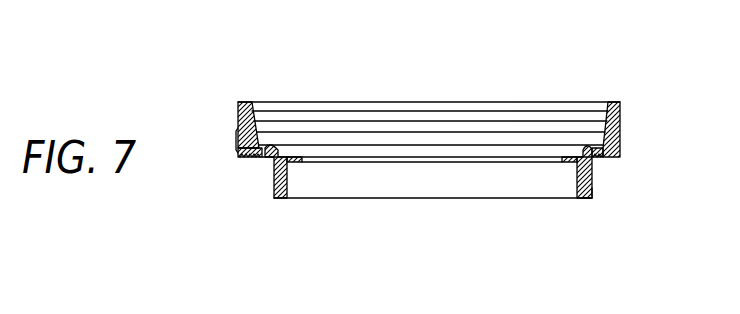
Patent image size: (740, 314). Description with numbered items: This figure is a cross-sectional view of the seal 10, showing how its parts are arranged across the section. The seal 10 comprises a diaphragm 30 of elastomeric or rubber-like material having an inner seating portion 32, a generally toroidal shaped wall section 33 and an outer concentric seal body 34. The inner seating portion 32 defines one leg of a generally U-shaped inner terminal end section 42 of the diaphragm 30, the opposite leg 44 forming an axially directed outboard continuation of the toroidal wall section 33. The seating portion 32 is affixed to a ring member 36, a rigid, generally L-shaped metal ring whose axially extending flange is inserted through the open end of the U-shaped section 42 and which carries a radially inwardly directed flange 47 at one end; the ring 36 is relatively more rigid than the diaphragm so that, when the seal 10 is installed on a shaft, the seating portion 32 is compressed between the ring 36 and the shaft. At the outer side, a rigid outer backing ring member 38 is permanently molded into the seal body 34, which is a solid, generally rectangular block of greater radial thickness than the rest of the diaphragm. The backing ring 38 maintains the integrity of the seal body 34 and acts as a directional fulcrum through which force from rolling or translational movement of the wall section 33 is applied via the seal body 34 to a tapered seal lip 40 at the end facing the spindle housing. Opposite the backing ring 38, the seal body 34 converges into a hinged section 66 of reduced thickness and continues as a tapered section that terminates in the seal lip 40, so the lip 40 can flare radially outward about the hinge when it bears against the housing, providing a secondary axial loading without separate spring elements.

The seal 10 is at (427, 220).
The diaphragm 30 is at (266, 147).
The inner seating portion 32 is at (345, 186).
The toroidal shaped wall section 33 is at (264, 143).
The seal body 34 is at (237, 138).
The ring member 36 is at (586, 200).
The outer backing ring member 38 is at (619, 158).
The tapered seal lip 40 is at (238, 100).
The U-shaped inner terminal end section 42 is at (281, 200).
The leg 44 is at (594, 190).
The radially inwardly directed flange 47 is at (560, 166).
The hinged section 66 is at (616, 124).